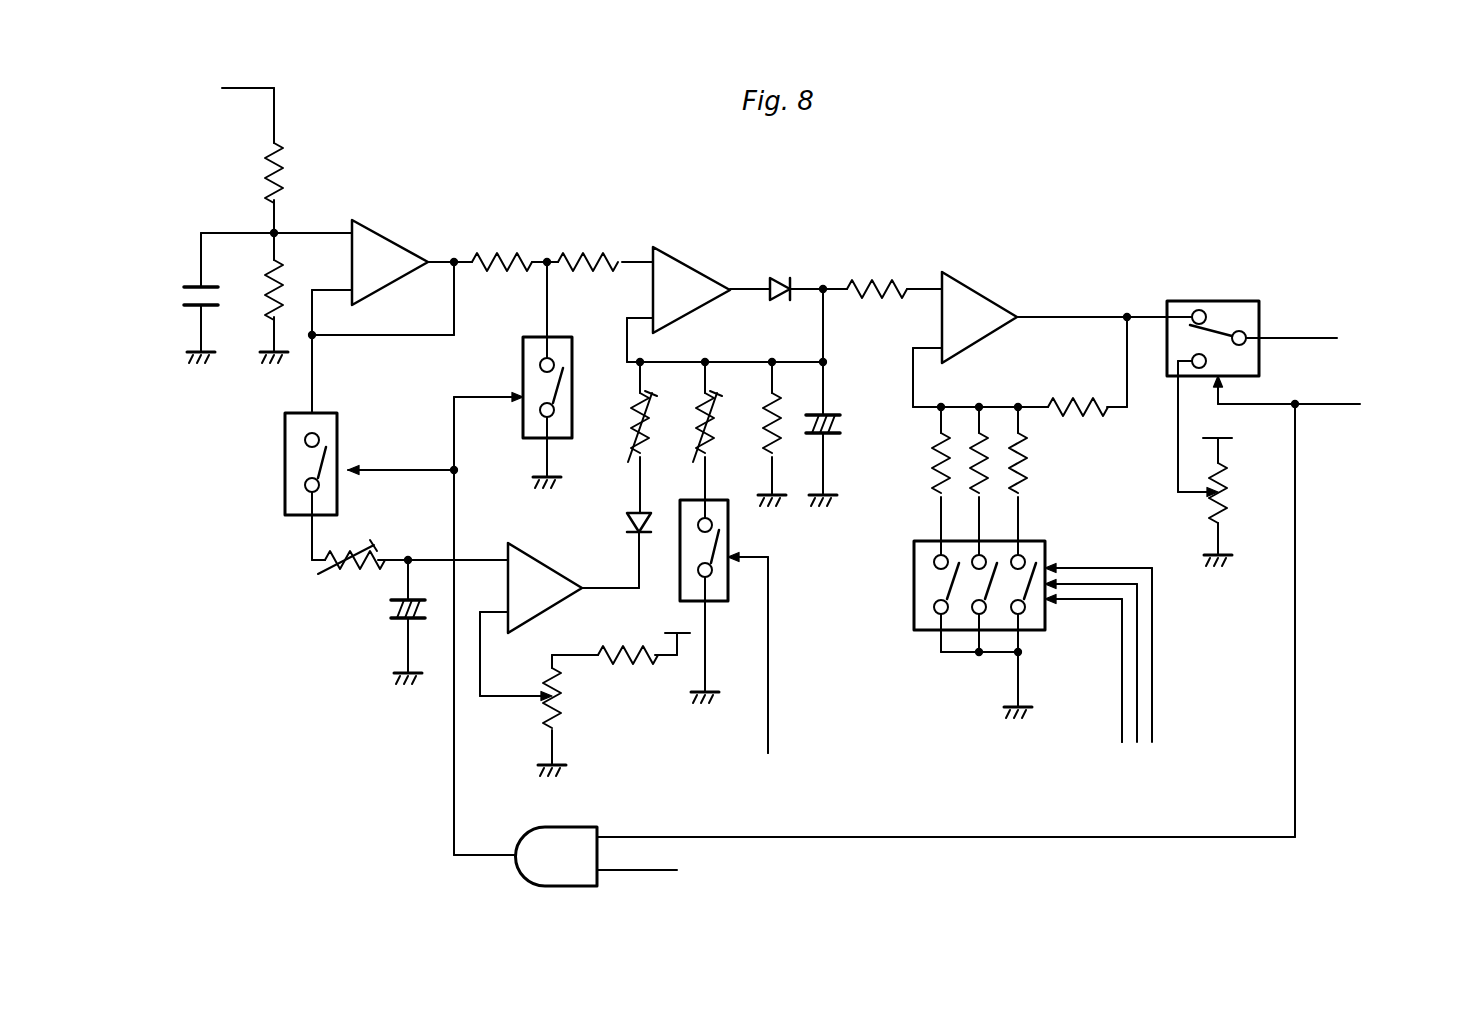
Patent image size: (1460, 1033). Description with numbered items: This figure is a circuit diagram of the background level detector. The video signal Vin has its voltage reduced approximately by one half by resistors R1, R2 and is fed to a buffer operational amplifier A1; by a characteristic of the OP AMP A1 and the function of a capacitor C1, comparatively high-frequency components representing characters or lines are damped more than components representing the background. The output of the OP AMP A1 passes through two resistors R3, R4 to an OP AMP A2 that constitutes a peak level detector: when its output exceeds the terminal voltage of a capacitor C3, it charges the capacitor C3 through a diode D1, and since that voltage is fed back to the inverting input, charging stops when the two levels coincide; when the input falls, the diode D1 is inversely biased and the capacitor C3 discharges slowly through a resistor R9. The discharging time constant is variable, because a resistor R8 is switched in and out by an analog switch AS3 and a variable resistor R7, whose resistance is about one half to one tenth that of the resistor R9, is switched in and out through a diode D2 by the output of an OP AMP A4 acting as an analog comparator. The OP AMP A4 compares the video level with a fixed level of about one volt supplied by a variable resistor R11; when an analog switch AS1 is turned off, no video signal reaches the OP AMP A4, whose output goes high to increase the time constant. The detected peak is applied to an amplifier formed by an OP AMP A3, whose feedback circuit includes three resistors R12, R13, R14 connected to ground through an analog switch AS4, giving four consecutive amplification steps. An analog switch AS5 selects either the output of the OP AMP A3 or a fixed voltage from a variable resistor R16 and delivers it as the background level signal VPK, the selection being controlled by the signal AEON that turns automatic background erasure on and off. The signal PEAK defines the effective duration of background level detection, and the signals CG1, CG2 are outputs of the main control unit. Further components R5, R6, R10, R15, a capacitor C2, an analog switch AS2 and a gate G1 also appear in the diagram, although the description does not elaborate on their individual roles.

The resistor R1 is at (269, 186).
The resistor R2 is at (270, 295).
The resistor R3 is at (500, 247).
The resistor R4 is at (595, 247).
The resistor R5 is at (890, 272).
The variable resistor R6 is at (356, 550).
The variable resistor R7 is at (632, 430).
The resistor R8 is at (688, 432).
The resistor R9 is at (752, 431).
The resistor R10 is at (618, 652).
The variable resistor R11 is at (562, 702).
The resistor R12 is at (930, 478).
The resistor R13 is at (965, 478).
The resistor R14 is at (1032, 456).
The feedback resistor R15 is at (1092, 416).
The variable resistor R16 is at (1202, 500).
The capacitor C1 is at (186, 319).
The capacitor C2 is at (396, 627).
The capacitor C3 is at (843, 422).
The operational amplifier A1 is at (387, 228).
The operational amplifier A2 is at (698, 254).
The operational amplifier A3 is at (996, 294).
The operational amplifier A4 is at (554, 574).
The diode D1 is at (782, 270).
The diode D2 is at (626, 526).
The analog switch AS1 is at (282, 466).
The analog switch AS2 is at (528, 338).
The analog switch AS3 is at (730, 526).
The analog switch AS4 is at (914, 623).
The analog switch AS5 is at (1238, 300).
The AND gate G1 is at (586, 822).
The control signal CG1 is at (769, 743).
The control signals CG2 is at (1137, 742).
The video signal Vin is at (188, 88).
The background level signal VPK is at (1375, 338).
The AEON signal AEON is at (1405, 404).
The PEAK signal PEAK is at (722, 871).